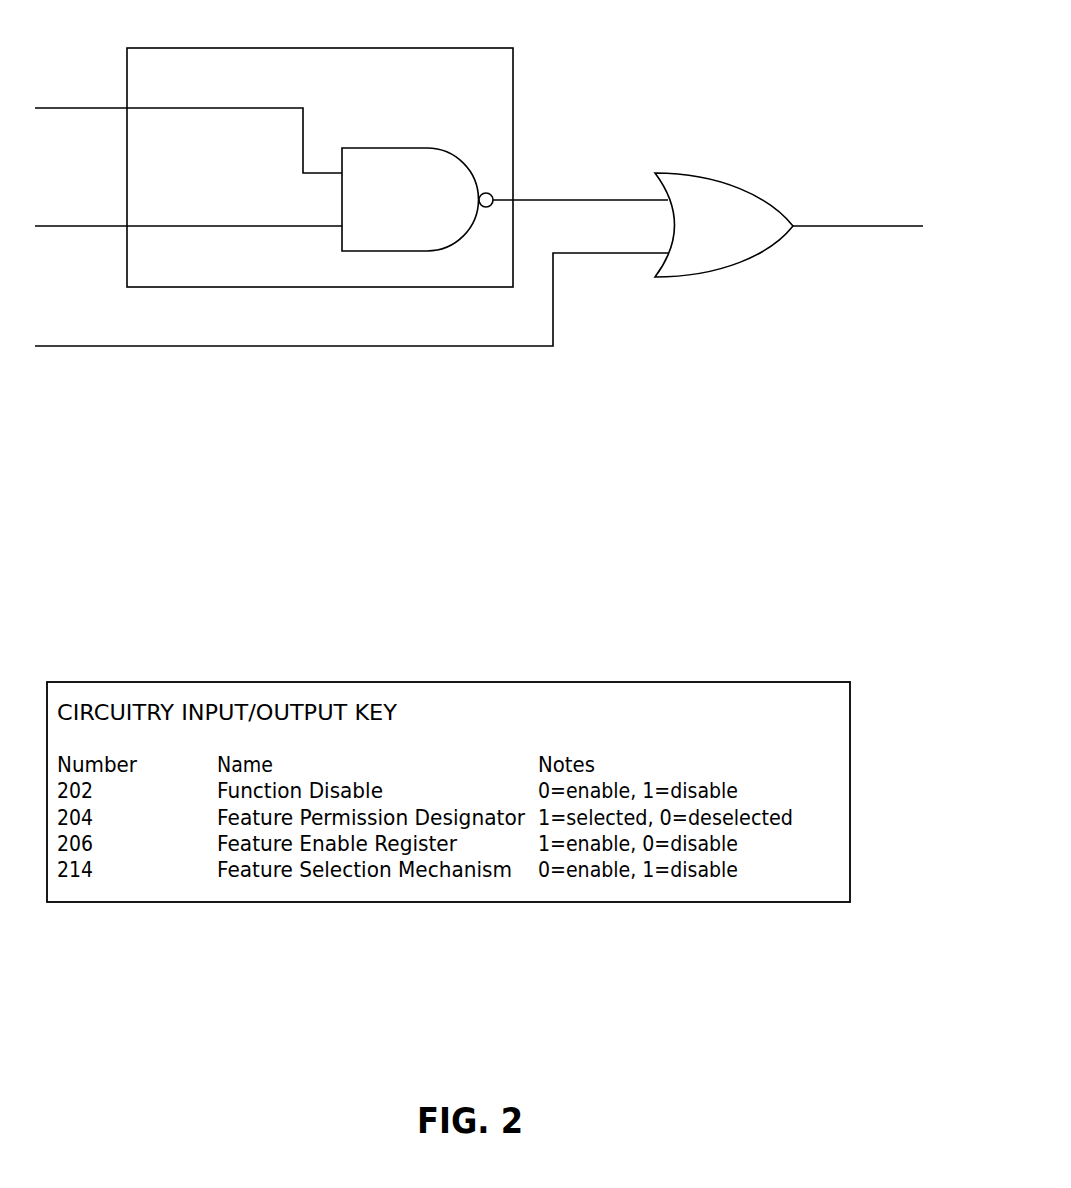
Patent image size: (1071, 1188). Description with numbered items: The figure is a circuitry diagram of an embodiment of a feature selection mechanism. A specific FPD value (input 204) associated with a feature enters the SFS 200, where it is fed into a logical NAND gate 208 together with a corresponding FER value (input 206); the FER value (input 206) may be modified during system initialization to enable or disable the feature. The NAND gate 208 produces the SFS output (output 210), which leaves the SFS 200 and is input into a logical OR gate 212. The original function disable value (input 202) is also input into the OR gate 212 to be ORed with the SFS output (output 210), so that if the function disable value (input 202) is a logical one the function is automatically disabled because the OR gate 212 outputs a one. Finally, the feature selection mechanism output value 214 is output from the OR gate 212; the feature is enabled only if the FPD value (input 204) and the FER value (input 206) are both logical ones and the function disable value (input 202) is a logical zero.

The SFS 200 is at (284, 48).
The function disable value input 202 is at (351, 299).
The FPD value input 204 is at (188, 124).
The FER value input 206 is at (188, 210).
The logical NAND gate 208 is at (397, 148).
The SFS output 210 is at (580, 185).
The logical OR gate 212 is at (685, 173).
The feature selection mechanism output value 214 is at (858, 211).